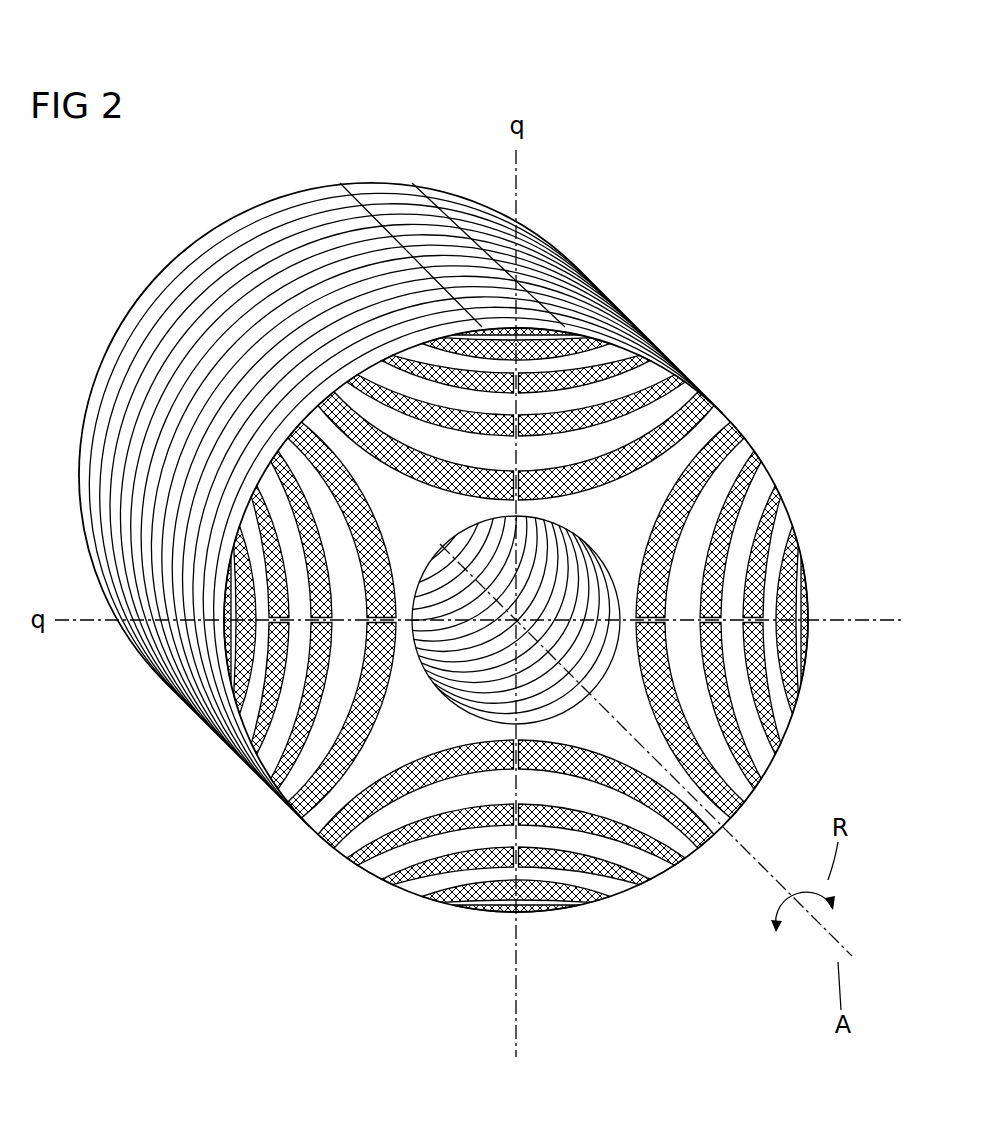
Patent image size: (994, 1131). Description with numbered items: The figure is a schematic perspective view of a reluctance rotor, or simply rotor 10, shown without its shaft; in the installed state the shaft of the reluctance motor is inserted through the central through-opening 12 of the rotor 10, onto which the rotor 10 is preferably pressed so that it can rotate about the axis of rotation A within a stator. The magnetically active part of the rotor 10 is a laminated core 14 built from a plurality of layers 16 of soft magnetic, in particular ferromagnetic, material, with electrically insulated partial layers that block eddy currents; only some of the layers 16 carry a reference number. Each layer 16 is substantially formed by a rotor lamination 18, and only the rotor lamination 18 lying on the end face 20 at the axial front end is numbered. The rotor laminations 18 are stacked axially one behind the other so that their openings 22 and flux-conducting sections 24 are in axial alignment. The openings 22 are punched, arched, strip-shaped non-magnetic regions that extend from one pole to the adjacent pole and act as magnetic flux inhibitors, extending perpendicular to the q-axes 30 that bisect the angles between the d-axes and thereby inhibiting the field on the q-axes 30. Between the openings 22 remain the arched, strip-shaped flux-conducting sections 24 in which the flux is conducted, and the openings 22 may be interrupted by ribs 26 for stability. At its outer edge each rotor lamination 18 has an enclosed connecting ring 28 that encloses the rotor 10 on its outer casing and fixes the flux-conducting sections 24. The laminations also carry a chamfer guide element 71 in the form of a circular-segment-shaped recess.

The rotor 10 is at (714, 177).
The through-opening 12 is at (489, 703).
The laminated core 14 is at (401, 479).
The layers 16 is at (300, 216).
The rotor lamination 18 is at (767, 488).
The end face 20 is at (632, 512).
The openings 22 is at (648, 850).
The flux-conducting sections 24 is at (497, 903).
The ribs 26 is at (650, 650).
The connecting ring 28 is at (703, 393).
The q-axes 30 is at (517, 1042).
The chamfer guide element 71 is at (530, 917).